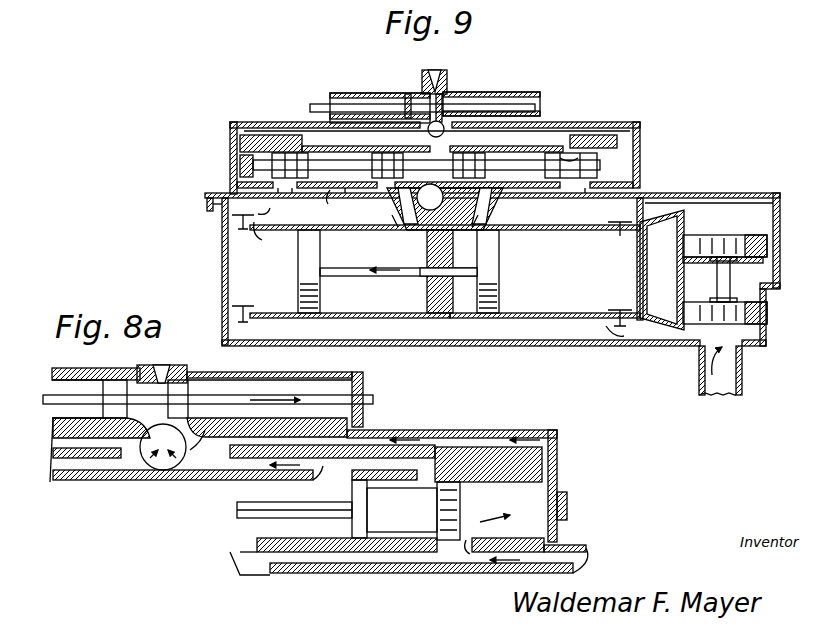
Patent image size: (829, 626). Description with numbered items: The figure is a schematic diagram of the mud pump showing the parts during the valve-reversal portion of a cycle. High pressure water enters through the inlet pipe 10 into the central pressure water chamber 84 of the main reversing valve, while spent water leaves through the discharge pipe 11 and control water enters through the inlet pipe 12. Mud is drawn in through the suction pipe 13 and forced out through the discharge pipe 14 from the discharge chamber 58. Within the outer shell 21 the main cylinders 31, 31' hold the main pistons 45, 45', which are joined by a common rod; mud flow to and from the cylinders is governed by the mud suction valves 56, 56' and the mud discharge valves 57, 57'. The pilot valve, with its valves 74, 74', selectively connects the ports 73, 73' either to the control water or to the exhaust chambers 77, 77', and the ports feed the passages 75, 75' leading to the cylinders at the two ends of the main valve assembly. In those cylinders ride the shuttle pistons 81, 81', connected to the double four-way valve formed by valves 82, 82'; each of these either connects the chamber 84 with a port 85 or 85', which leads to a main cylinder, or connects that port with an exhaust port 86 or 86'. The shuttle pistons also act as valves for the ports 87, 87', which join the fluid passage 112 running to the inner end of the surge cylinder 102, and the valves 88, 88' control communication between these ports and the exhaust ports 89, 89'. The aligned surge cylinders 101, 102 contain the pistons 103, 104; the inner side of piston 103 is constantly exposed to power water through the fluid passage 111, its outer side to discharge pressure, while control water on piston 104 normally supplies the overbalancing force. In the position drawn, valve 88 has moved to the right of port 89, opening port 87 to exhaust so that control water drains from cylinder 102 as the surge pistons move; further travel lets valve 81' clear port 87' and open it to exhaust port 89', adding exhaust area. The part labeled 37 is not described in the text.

In FIG. 9, the inlet pipe 10 is at (445, 250).
In FIG. 9, the discharge pipe 11 is at (450, 112).
In FIG. 8a, the discharge pipe 11 is at (158, 466).
In FIG. 9, the inlet pipe 12 is at (447, 76).
In FIG. 8a, the inlet pipe 12 is at (160, 372).
In FIG. 9, the suction pipe 13 is at (746, 378).
In FIG. 9, the discharge pipe 14 is at (207, 196).
In FIG. 9, the outer shell 21 is at (556, 345).
In FIG. 9, the cylinder 31 is at (445, 271).
In FIG. 9, the cylinder 31' is at (546, 259).
In FIG. 9, the casing wall 37 is at (430, 343).
In FIG. 9, the piston 45 is at (324, 271).
In FIG. 9, the piston 45' is at (506, 271).
In FIG. 9, the mud suction valve 56 is at (226, 306).
In FIG. 9, the mud suction valve 56' is at (616, 308).
In FIG. 9, the mud discharge valve 57 is at (230, 224).
In FIG. 9, the mud discharge valve 57' is at (616, 238).
In FIG. 9, the discharge chamber 58 is at (655, 203).
In FIG. 9, the port 73 is at (396, 93).
In FIG. 8a, the port 73 is at (100, 461).
In FIG. 8a, the port 73' is at (200, 466).
In FIG. 9, the valve 74 is at (422, 92).
In FIG. 8a, the valve 74 is at (116, 383).
In FIG. 8a, the valve 74' is at (193, 383).
In FIG. 9, the passage 75 is at (435, 142).
In FIG. 8a, the passage 75' is at (398, 469).
In FIG. 9, the exhaust chamber 77 is at (380, 94).
In FIG. 8a, the exhaust chamber 77 is at (202, 383).
In FIG. 9, the exhaust chamber 77' is at (491, 91).
In FIG. 9, the shuttle piston 81 is at (253, 163).
In FIG. 9, the shuttle piston 81' is at (593, 122).
In FIG. 8a, the shuttle piston 81' is at (413, 544).
In FIG. 9, the valve 82 is at (379, 186).
In FIG. 9, the valve 82' is at (493, 189).
In FIG. 9, the central pressure water chamber 84 is at (430, 197).
In FIG. 9, the port 85 is at (388, 233).
In FIG. 9, the port 85' is at (488, 217).
In FIG. 9, the exhaust port 86 is at (422, 103).
In FIG. 8a, the exhaust port 86' is at (361, 438).
In FIG. 9, the port 87 is at (291, 204).
In FIG. 9, the port 87' is at (589, 206).
In FIG. 8a, the port 87' is at (478, 571).
In FIG. 9, the valve 88 is at (333, 204).
In FIG. 8a, the valve 88' is at (305, 545).
In FIG. 9, the exhaust port 89 is at (401, 128).
In FIG. 9, the exhaust port 89' is at (571, 138).
In FIG. 8a, the exhaust port 89' is at (405, 441).
In FIG. 9, the surge cylinder 101 is at (768, 222).
In FIG. 9, the surge cylinder 102 is at (768, 297).
In FIG. 9, the piston 103 is at (768, 244).
In FIG. 9, the piston 104 is at (768, 312).
In FIG. 9, the fluid passage 111 is at (684, 262).
In FIG. 9, the fluid passage 112 is at (742, 192).
In FIG. 8a, the fluid passage 112 is at (575, 540).